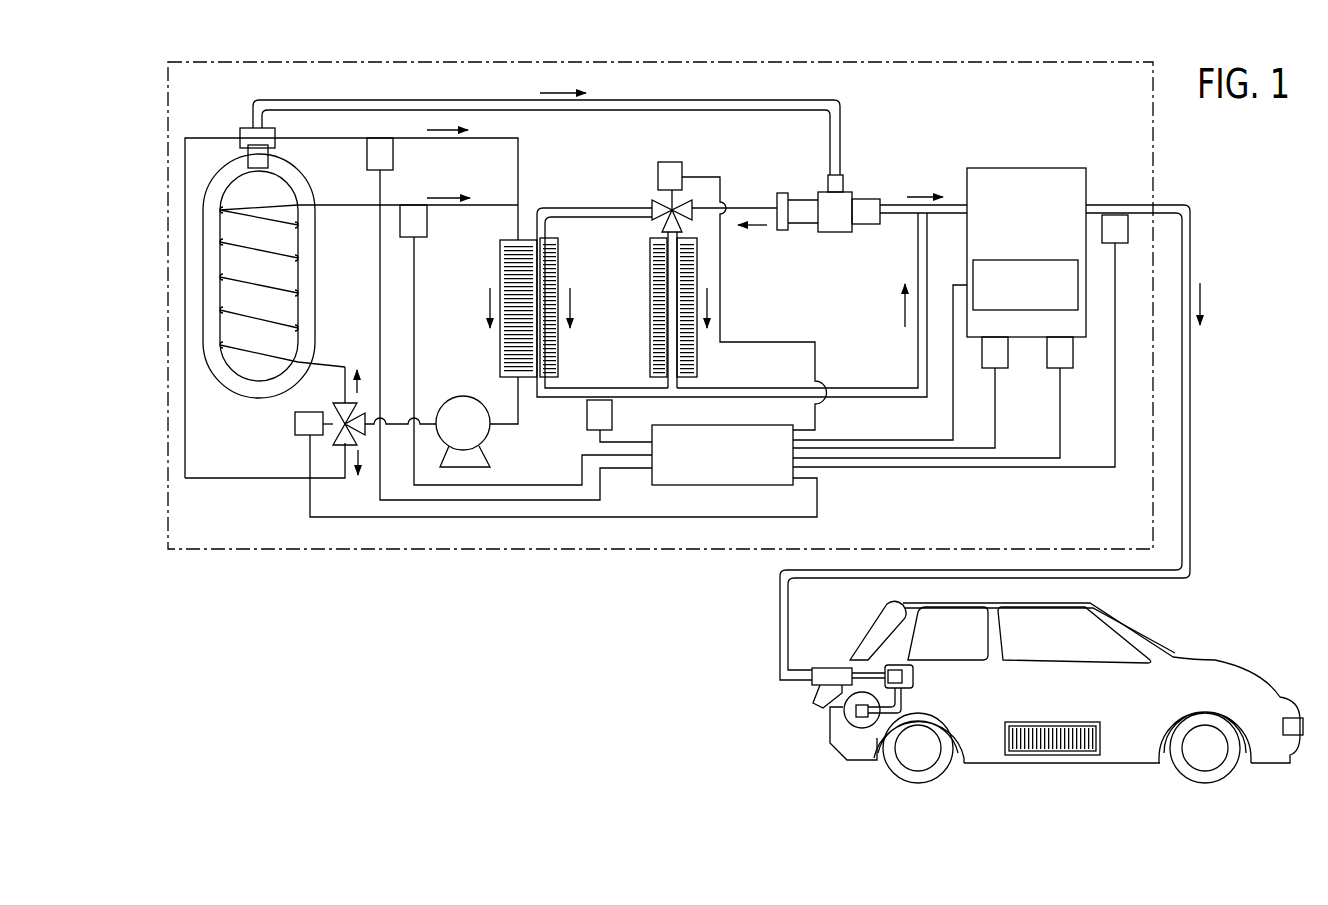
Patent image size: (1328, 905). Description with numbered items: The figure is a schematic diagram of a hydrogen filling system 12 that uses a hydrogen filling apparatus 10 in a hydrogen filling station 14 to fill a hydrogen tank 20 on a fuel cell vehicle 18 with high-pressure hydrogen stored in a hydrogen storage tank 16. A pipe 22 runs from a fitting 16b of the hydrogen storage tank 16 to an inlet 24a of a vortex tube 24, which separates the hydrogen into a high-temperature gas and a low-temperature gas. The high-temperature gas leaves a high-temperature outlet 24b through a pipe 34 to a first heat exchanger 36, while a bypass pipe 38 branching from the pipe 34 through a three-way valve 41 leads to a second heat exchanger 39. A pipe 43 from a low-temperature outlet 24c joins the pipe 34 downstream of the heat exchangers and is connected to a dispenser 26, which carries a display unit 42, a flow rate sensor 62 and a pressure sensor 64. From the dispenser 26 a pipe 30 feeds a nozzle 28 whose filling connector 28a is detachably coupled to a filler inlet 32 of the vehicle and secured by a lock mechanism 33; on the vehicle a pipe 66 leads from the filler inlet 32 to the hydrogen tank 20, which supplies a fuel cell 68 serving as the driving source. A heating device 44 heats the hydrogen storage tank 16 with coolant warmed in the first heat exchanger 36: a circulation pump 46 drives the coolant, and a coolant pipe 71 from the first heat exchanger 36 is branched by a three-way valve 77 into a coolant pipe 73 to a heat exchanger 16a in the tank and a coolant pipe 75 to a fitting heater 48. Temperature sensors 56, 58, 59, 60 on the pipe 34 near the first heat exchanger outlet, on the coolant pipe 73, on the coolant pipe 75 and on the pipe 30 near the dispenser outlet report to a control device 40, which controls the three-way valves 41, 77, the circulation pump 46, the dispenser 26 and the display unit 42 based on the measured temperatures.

The hydrogen filling apparatus 10 is at (860, 94).
The hydrogen filling system 12 is at (1299, 154).
The hydrogen filling station 14 is at (196, 62).
The hydrogen storage tank 16 is at (201, 268).
The heat exchanger 16a is at (232, 240).
The fitting 16b is at (268, 158).
The fuel cell vehicle 18 is at (1157, 642).
The hydrogen tank 20 is at (843, 727).
The pipe 22 is at (432, 100).
The vortex tube 24 is at (861, 188).
The inlet 24a is at (843, 182).
The high-temperature outlet 24b is at (781, 191).
The low-temperature outlet 24c is at (857, 233).
The dispenser 26 is at (1065, 168).
The nozzle 28 is at (817, 668).
The filling connector 28a is at (862, 668).
The pipe 30 is at (1189, 237).
The filler inlet 32 is at (898, 666).
The lock mechanism 33 is at (915, 686).
The pipe 34 is at (741, 207).
The first heat exchanger 36 is at (559, 255).
The bypass pipe 38 is at (661, 234).
The second heat exchanger 39 is at (650, 267).
The control device 40 is at (658, 425).
The three-way valve 41 is at (667, 162).
The display unit 42 is at (1043, 260).
The pipe 43 is at (901, 216).
The heating device 44 is at (546, 175).
The circulation pump 46 is at (452, 402).
The fitting heater 48 is at (238, 127).
The temperature sensor 56 is at (583, 428).
The temperature sensor 58 is at (428, 217).
The temperature sensor 59 is at (394, 148).
The temperature sensor 60 is at (1129, 238).
The flow rate sensor 62 is at (982, 365).
The pressure sensor 64 is at (1047, 365).
The pipe 66 is at (850, 760).
The fuel cell 68 is at (1081, 722).
The coolant pipe 71 is at (522, 414).
The coolant pipe 73 is at (477, 205).
The coolant pipe 75 is at (500, 138).
The three-way valve 77 is at (295, 423).